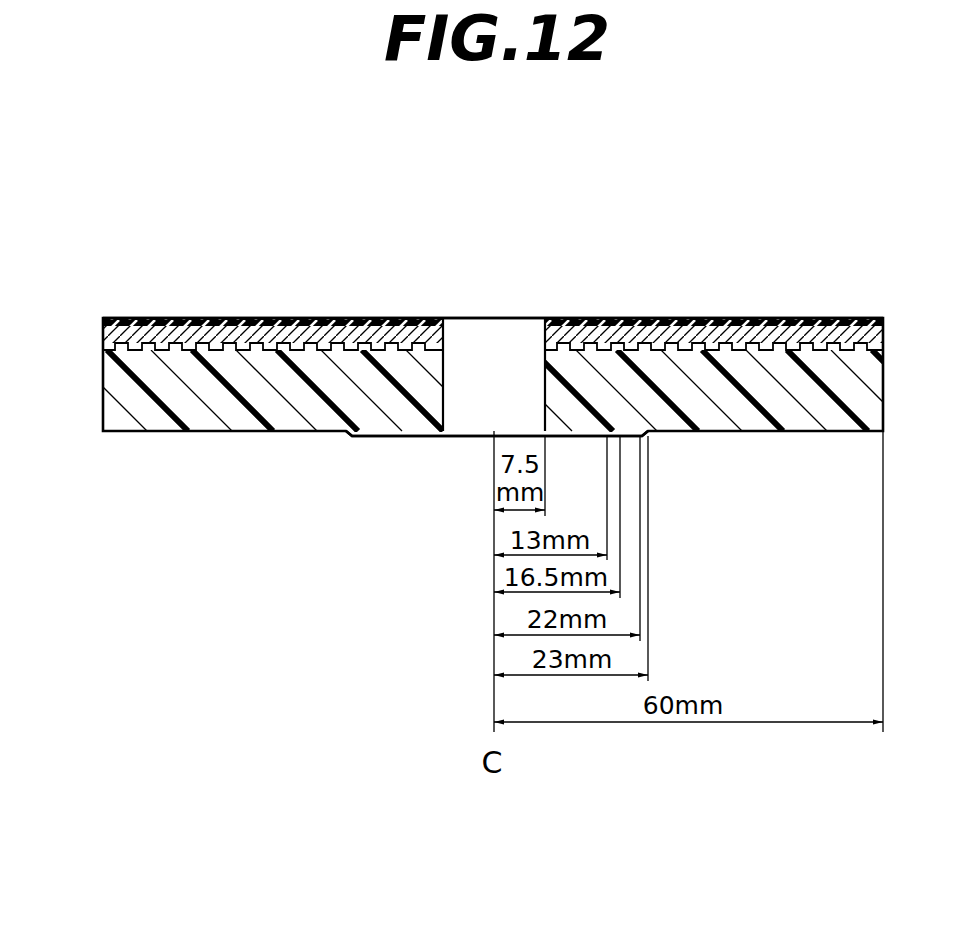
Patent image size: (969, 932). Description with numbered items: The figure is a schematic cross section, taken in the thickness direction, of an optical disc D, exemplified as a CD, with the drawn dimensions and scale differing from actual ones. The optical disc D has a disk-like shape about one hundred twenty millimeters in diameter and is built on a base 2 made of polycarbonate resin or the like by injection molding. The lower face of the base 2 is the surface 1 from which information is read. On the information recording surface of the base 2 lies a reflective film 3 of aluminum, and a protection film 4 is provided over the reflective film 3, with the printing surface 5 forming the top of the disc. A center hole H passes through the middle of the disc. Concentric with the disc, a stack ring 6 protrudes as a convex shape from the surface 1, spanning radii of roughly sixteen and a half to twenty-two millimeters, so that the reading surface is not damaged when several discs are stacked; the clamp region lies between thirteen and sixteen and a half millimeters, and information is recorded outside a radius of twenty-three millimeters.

The surface from which information is read 1 is at (165, 433).
The base 2 is at (123, 383).
The reflective film 3 is at (110, 333).
The protection film 4 is at (110, 320).
The printing surface 5 is at (240, 320).
The stack ring 6 is at (353, 438).
The center hole H is at (483, 328).
The optical disc D is at (262, 452).